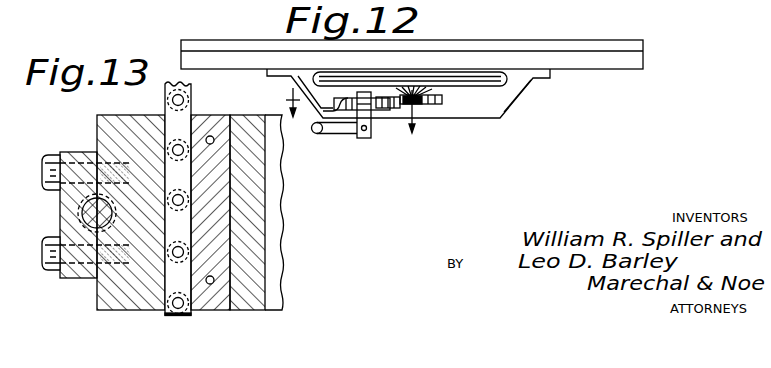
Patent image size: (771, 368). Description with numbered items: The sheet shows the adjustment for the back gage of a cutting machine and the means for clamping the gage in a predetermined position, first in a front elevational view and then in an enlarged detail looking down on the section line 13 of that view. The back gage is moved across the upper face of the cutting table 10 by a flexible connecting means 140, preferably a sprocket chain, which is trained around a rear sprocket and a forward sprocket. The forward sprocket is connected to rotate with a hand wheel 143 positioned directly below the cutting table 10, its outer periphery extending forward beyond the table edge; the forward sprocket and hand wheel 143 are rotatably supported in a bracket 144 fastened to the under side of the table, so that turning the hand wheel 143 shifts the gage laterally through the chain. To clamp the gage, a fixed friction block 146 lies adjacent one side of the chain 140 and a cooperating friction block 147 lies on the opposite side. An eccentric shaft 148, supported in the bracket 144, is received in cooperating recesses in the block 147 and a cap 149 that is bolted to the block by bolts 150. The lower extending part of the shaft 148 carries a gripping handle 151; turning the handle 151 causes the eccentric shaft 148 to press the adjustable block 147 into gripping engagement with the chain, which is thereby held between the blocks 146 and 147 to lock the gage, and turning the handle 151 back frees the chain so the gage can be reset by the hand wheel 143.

In FIG. 12, the cutting table 10 is at (615, 46).
In FIG. 12, the section line 13— 13 is at (350, 114).
In FIG. 12, the flexible connecting means 140 is at (441, 100).
In FIG. 13, the flexible connecting means 140 is at (192, 100).
In FIG. 12, the hand wheel 143 is at (498, 75).
In FIG. 12, the bracket 144 is at (518, 93).
In FIG. 12, the fixed friction block 146 is at (390, 110).
In FIG. 13, the fixed friction block 146 is at (215, 232).
In FIG. 13, the friction block 147 is at (139, 124).
In FIG. 12, the eccentric shaft 148 is at (364, 139).
In FIG. 13, the eccentric shaft 148 is at (82, 212).
In FIG. 12, the cap 149 is at (355, 112).
In FIG. 13, the cap 149 is at (85, 152).
In FIG. 13, the bolts 150 is at (49, 158).
In FIG. 12, the gripping handle 151 is at (337, 134).